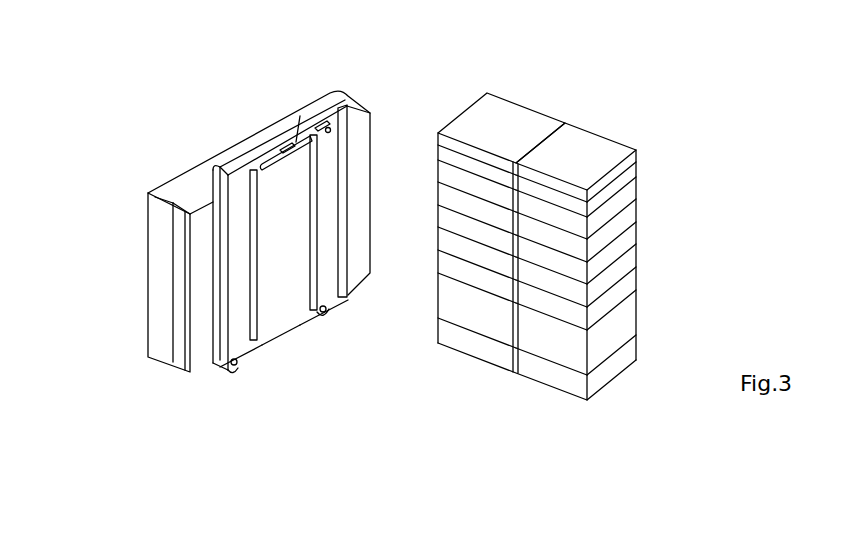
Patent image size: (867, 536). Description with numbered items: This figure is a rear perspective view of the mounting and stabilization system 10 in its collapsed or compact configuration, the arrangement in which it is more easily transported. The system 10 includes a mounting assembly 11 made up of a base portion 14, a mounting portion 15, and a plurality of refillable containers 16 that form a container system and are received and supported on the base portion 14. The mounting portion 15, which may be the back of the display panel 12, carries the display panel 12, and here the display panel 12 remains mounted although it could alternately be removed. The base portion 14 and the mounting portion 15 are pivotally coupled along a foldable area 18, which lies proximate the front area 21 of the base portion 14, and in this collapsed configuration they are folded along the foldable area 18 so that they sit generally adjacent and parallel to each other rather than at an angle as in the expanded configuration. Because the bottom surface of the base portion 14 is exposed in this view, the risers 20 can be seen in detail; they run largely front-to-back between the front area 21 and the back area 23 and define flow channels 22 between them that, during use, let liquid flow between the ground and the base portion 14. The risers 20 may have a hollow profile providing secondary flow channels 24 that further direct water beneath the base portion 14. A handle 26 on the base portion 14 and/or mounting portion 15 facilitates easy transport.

The mounting and stabilization system 10 is at (112, 174).
The mounting assembly 11 is at (330, 160).
The display panel 12 is at (158, 285).
The base portion 14 is at (283, 290).
The mounting portion 15 is at (215, 188).
The refillable containers 16 is at (620, 303).
The foldable area 18 is at (218, 367).
The risers 20 is at (252, 300).
The front area 21 is at (277, 313).
The flow channels 22 is at (328, 280).
The back area 23 is at (328, 128).
The secondary flow channels 24 is at (300, 115).
The handle 26 is at (272, 145).